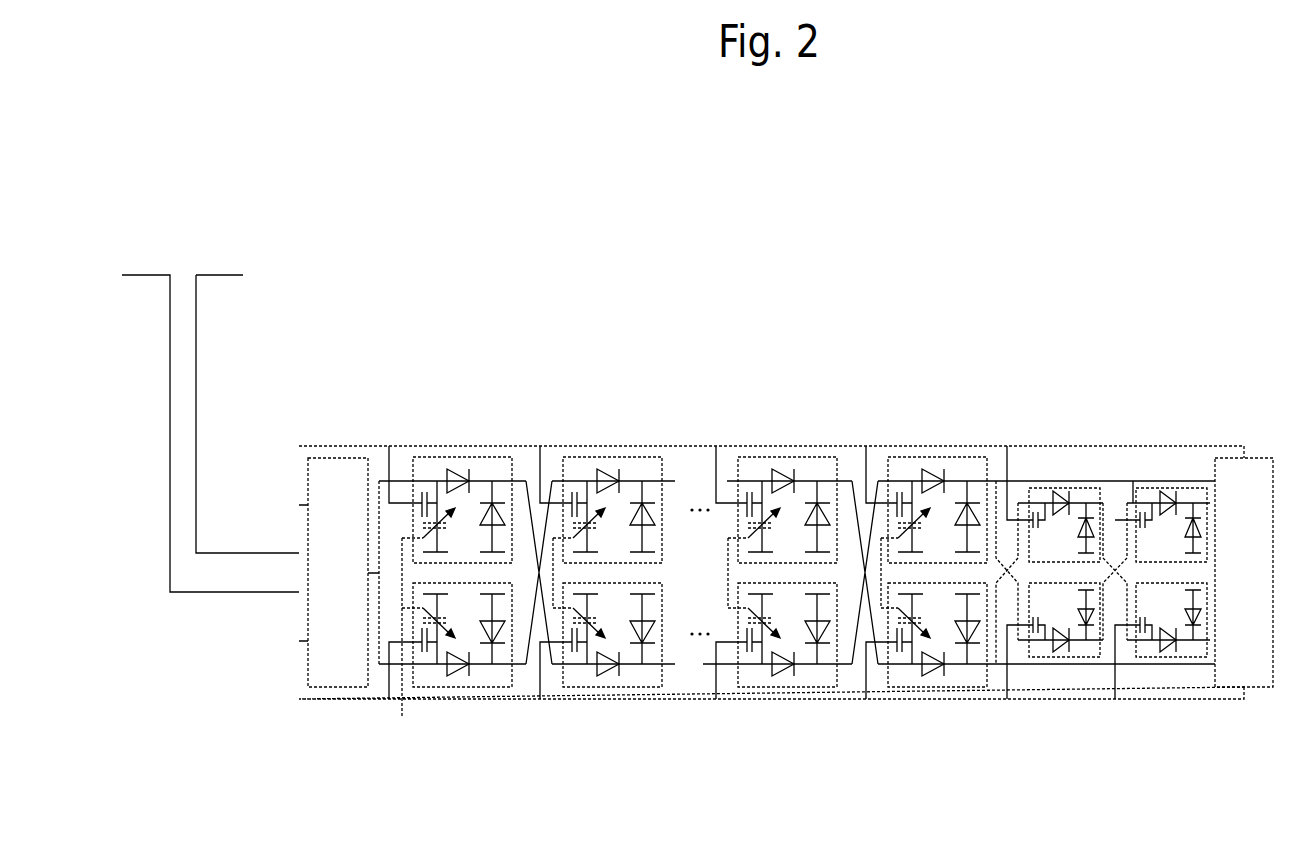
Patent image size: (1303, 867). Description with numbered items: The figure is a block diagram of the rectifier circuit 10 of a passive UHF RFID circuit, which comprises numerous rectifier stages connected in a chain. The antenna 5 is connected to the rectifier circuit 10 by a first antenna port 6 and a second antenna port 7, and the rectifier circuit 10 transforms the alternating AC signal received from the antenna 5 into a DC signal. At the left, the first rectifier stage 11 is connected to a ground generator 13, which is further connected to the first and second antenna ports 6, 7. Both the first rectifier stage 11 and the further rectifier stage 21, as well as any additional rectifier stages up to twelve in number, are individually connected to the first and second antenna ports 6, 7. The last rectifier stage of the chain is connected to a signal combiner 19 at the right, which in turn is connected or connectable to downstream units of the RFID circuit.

The antenna 5 is at (221, 369).
The first antenna port 6 is at (228, 275).
The second antenna port 7 is at (147, 275).
The rectifier circuit 10 is at (791, 499).
The first rectifier stage 11 is at (467, 442).
The rectifier stage 21 is at (580, 442).
The ground generator 13 is at (332, 467).
The signal combiner 19 is at (1256, 470).